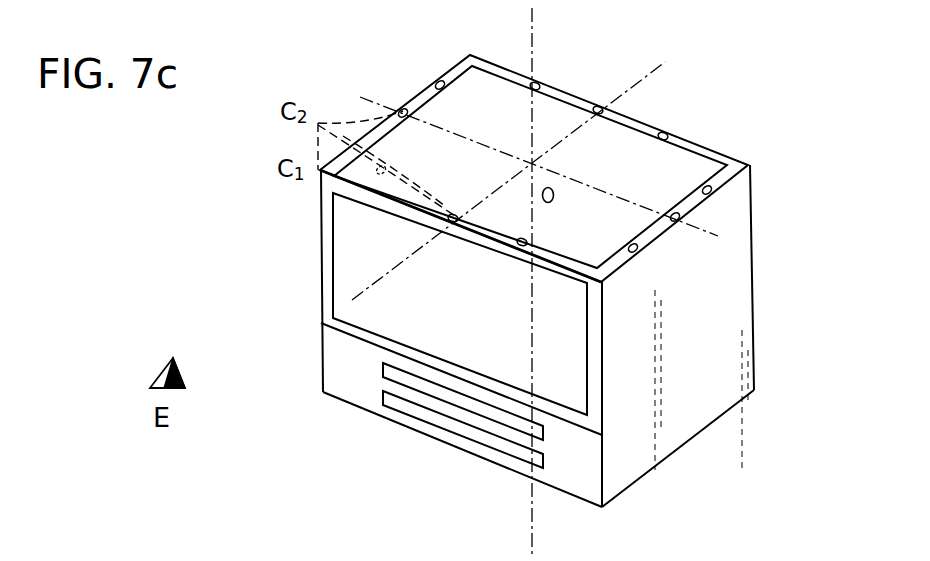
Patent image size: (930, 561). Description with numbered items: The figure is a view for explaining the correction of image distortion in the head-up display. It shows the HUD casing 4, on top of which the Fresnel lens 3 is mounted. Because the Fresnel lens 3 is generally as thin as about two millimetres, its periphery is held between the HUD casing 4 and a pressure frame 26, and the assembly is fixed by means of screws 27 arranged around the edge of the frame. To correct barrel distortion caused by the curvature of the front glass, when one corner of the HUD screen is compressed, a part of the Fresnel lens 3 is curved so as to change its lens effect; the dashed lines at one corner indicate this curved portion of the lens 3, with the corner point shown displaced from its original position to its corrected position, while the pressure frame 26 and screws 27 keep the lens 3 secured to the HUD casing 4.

The screws 27 is at (438, 80).
The Fresnel lens 3 is at (677, 170).
The pressure frame 26 is at (747, 164).
The HUD casing 4 is at (732, 282).